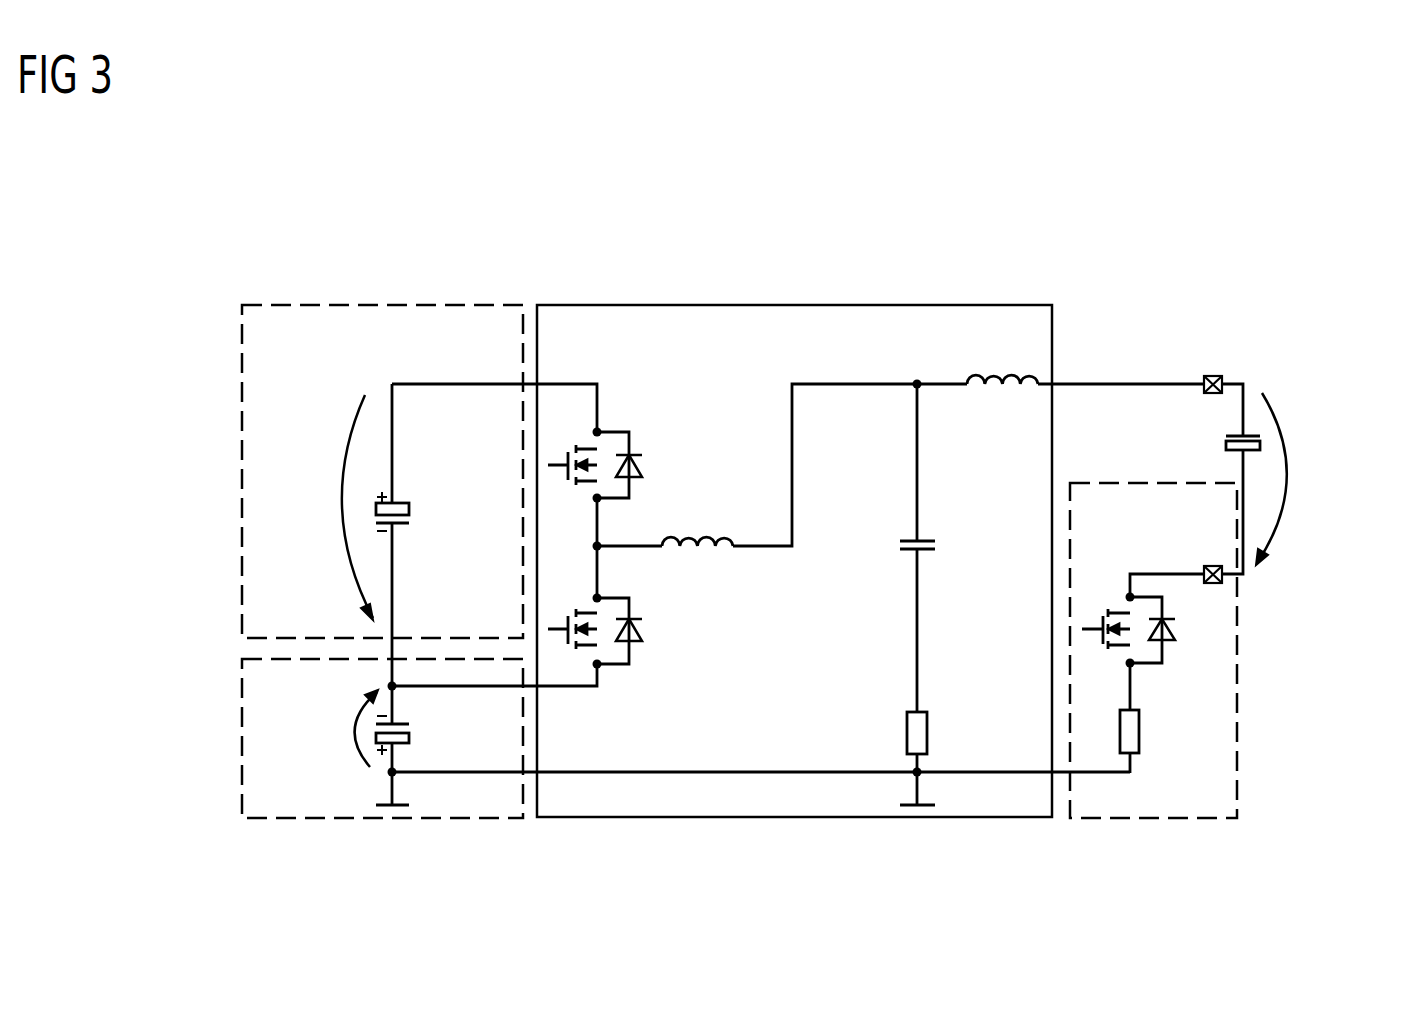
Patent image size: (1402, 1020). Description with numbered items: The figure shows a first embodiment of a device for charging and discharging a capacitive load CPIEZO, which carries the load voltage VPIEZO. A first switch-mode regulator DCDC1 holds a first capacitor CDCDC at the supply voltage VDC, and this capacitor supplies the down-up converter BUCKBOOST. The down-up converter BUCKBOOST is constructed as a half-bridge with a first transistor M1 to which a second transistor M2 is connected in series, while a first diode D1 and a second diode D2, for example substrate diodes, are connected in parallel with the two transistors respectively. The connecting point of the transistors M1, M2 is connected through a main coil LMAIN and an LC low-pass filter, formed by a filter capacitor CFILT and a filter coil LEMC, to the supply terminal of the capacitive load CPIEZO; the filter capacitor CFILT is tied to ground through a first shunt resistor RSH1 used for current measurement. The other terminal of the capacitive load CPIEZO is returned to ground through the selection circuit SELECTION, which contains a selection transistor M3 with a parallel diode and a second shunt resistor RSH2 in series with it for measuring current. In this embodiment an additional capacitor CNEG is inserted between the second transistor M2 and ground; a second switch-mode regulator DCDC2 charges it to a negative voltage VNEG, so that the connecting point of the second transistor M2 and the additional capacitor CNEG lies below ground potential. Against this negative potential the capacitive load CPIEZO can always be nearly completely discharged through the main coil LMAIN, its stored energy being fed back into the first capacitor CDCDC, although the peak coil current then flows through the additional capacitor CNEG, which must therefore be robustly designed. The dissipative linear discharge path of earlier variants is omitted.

The first switch-mode regulator DCDC1 is at (382, 471).
The second switch-mode regulator DCDC2 is at (382, 738).
The down-up converter BUCKBOOST is at (794, 561).
The selection circuit SELECTION is at (1153, 650).
The first capacitor CDCDC is at (439, 542).
The supply voltage VDC is at (317, 507).
The additional capacitor CNEG is at (437, 733).
The negative voltage VNEG is at (325, 728).
The first transistor M1 is at (572, 437).
The first diode D1 is at (623, 433).
The second transistor M2 is at (572, 602).
The second diode D2 is at (623, 598).
The main coil LMAIN is at (708, 509).
The filter coil LEMC is at (997, 413).
The filter capacitor CFILT is at (960, 579).
The first shunt resistor RSH1 is at (963, 736).
The second shunt resistor RSH2 is at (1172, 737).
The selection transistor M3 is at (1156, 617).
The capacitive load CPIEZO is at (1187, 438).
The load voltage VPIEZO is at (1322, 479).